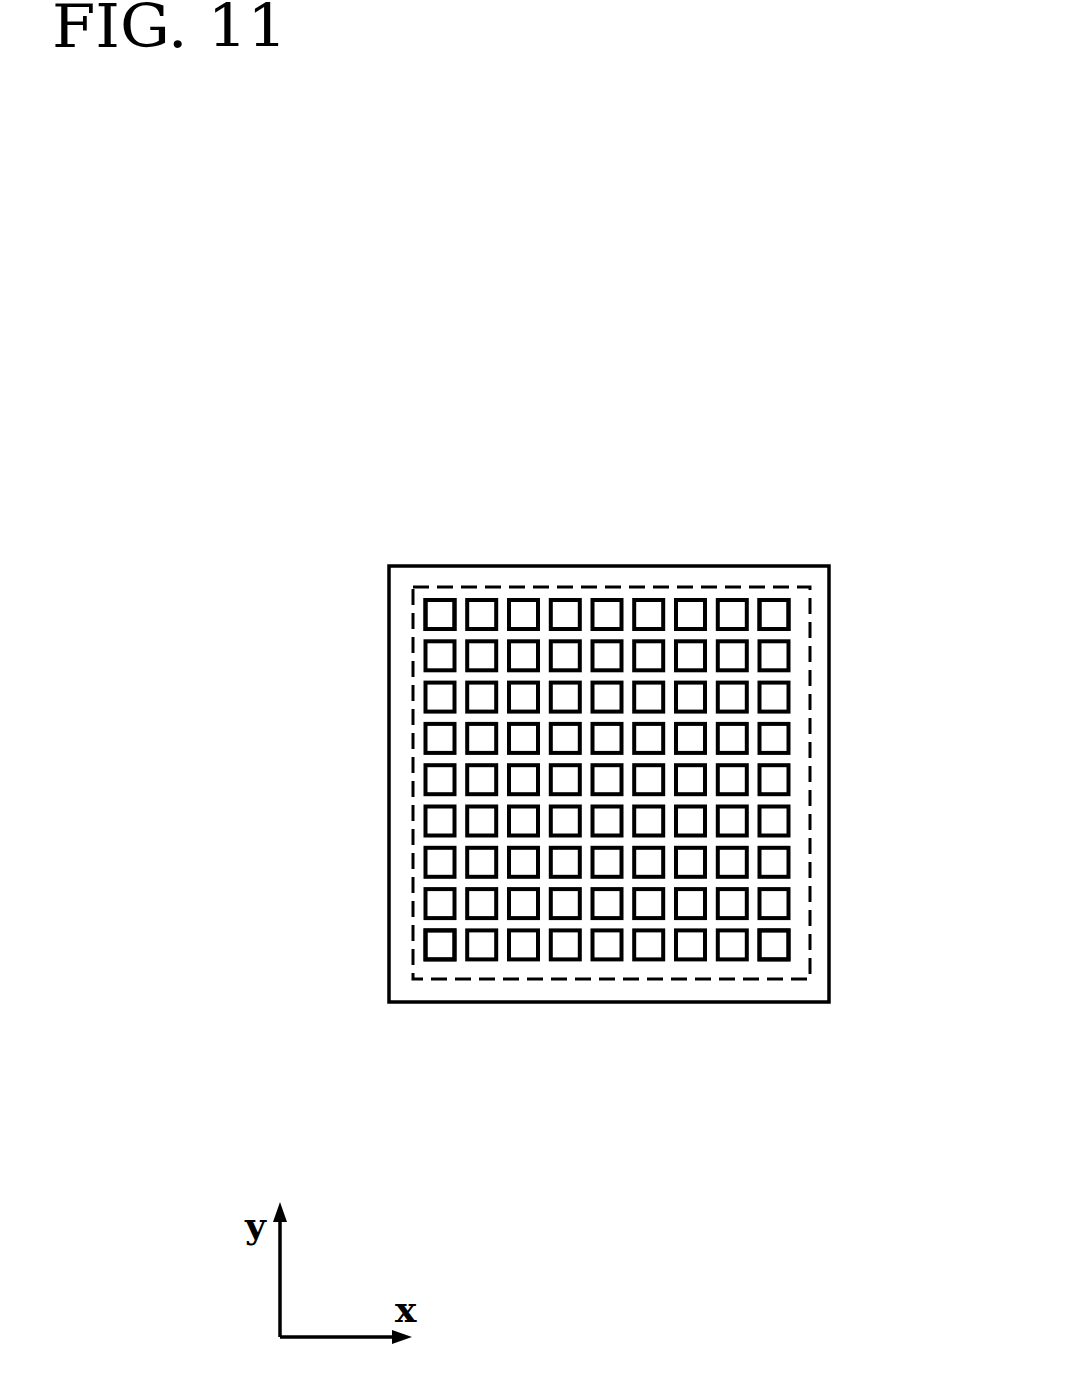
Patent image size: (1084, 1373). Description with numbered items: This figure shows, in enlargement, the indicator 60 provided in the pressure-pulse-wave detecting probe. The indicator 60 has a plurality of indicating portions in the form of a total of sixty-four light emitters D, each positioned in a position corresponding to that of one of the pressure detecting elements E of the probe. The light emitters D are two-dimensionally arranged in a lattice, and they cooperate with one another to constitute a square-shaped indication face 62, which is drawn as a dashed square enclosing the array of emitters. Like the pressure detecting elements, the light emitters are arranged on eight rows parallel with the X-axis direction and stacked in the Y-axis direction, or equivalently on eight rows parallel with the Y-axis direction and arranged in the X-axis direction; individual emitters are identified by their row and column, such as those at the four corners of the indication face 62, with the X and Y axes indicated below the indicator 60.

The indicator 60 is at (705, 450).
The indication face 62 is at (810, 807).